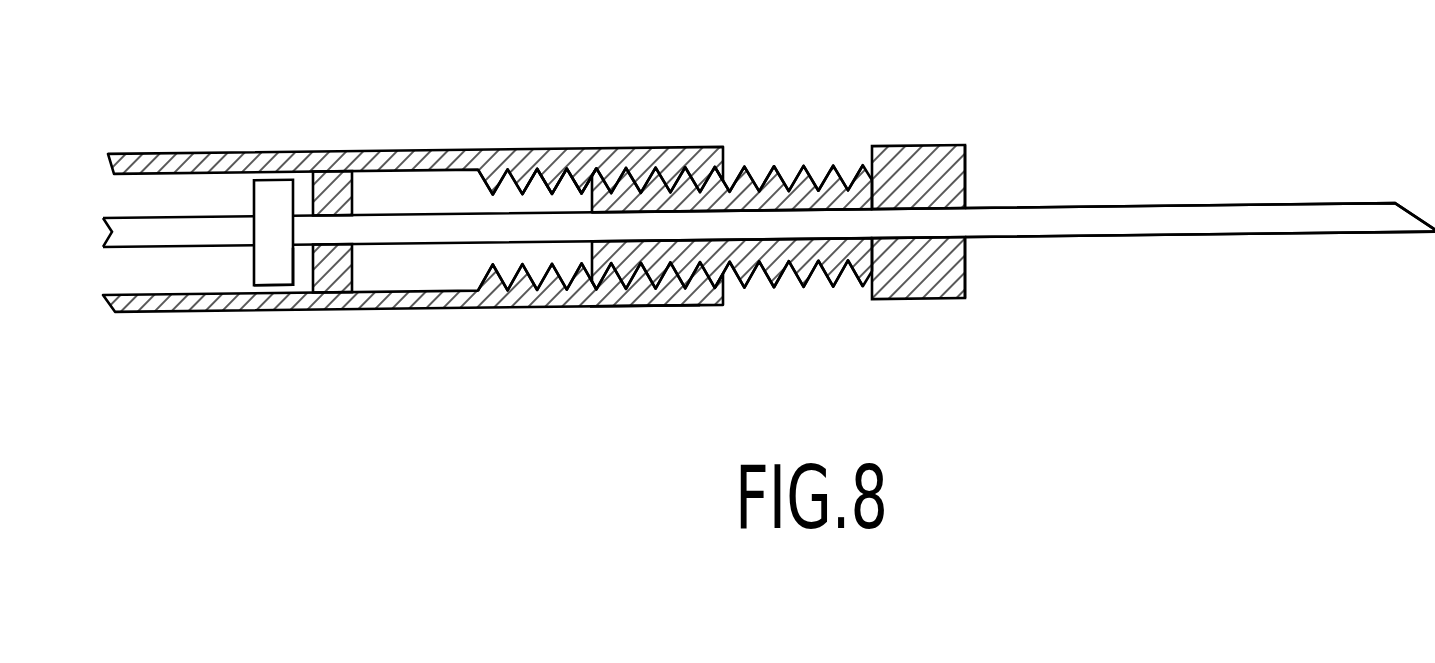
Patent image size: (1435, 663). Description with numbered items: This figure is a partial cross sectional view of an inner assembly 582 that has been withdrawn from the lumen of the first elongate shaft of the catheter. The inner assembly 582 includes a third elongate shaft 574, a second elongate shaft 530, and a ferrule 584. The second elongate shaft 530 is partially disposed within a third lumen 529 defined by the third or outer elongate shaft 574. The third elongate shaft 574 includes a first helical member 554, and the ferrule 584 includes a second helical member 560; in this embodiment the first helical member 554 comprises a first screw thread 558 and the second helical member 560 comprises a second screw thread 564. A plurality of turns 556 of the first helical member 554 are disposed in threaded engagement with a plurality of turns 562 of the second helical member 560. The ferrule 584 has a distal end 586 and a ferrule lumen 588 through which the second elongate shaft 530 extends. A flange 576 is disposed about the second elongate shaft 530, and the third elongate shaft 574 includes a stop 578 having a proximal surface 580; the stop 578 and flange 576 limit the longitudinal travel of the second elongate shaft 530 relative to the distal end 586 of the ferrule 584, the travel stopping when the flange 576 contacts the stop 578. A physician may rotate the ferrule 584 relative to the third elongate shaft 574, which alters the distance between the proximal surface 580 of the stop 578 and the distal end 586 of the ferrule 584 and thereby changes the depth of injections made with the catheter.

The third lumen 529 is at (148, 312).
The second elongate shaft 530 is at (222, 228).
The first helical member 554 is at (460, 186).
The turns 556 is at (487, 275).
The first screw thread 558 is at (544, 208).
The second helical member 560 is at (820, 140).
The turns 562 is at (803, 287).
The second screw thread 564 is at (848, 138).
The third elongate shaft 574 is at (148, 155).
The flange 576 is at (268, 266).
The stop 578 is at (331, 180).
The proximal surface 580 is at (302, 283).
The inner assembly 582 is at (618, 402).
The ferrule 584 is at (940, 152).
The distal end 586 is at (965, 272).
The ferrule lumen 588 is at (986, 183).